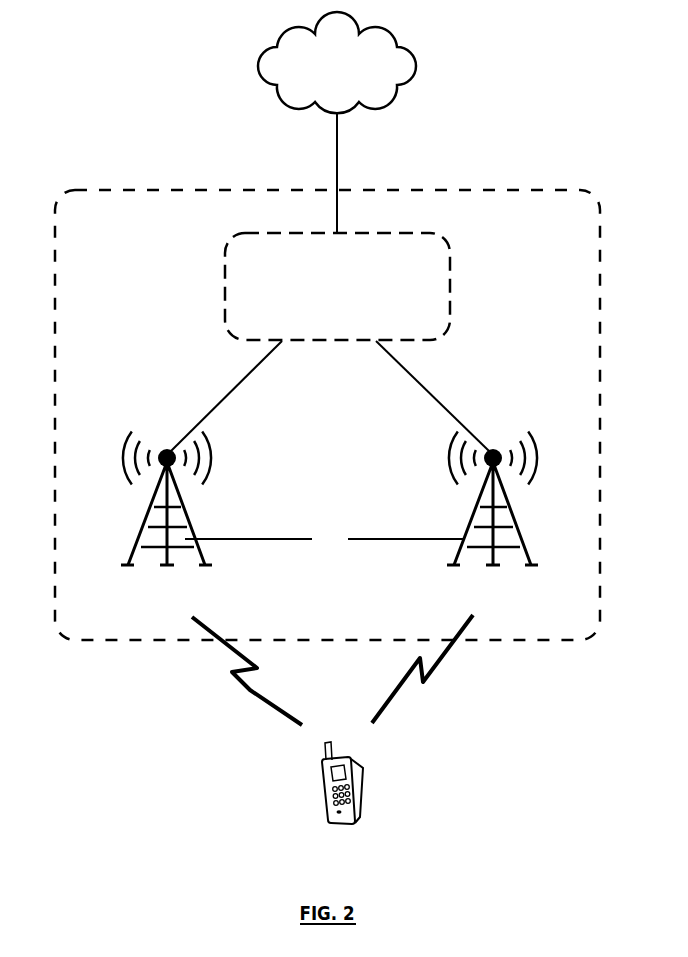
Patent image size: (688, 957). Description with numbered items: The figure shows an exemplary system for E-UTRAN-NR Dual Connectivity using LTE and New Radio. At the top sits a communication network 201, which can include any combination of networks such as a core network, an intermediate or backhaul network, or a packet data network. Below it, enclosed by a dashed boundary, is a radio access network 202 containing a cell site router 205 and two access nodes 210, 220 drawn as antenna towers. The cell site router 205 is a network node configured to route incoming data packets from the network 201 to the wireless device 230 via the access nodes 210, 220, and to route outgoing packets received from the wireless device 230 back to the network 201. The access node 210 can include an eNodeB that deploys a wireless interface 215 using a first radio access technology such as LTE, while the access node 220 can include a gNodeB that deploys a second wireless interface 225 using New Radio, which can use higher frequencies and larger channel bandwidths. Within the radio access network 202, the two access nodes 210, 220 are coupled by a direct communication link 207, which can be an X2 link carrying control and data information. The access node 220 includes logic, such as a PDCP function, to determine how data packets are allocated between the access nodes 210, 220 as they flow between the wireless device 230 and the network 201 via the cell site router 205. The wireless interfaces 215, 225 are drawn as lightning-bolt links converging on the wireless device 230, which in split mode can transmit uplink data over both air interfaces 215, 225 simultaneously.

The communication network 201 is at (320, 78).
The radio access network 202 is at (130, 190).
The cell site router 205 is at (320, 312).
The direct communication link 207 is at (395, 539).
The access node 210 is at (149, 528).
The wireless interface 215 is at (252, 688).
The access node 220 is at (515, 530).
The wireless interface 225 is at (430, 677).
The wireless device 230 is at (328, 816).